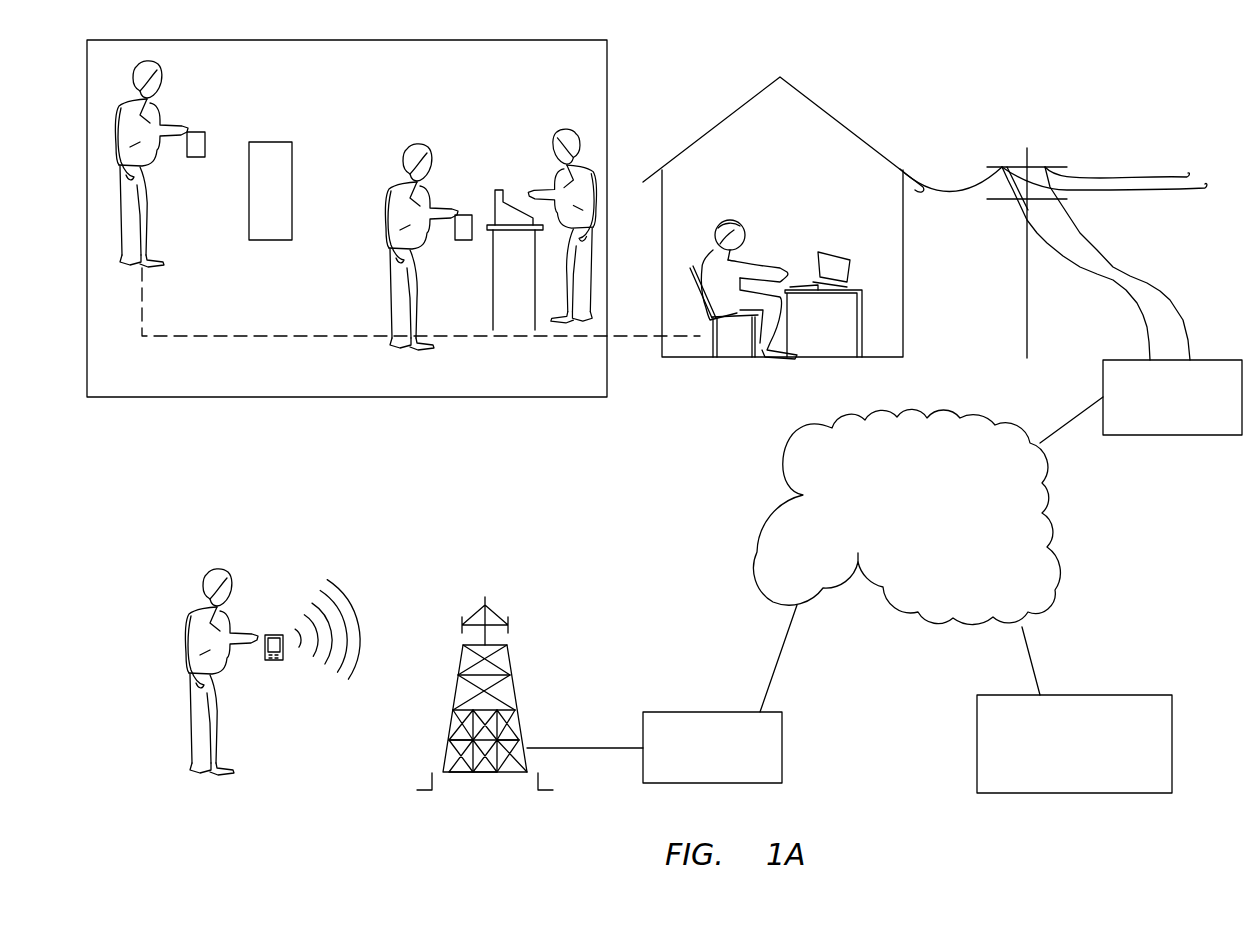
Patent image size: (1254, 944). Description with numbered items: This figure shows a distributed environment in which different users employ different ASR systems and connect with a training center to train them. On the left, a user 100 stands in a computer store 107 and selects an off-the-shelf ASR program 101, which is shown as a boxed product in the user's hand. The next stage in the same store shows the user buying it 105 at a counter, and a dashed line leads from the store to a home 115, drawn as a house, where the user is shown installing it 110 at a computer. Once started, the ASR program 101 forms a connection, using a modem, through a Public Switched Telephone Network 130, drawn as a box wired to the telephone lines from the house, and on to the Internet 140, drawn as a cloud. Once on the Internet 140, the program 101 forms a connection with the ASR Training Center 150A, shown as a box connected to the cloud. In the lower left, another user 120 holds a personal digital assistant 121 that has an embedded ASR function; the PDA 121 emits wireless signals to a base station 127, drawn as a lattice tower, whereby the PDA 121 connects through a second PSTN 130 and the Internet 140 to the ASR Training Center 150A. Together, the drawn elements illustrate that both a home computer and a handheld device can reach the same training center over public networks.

The user 100 is at (152, 220).
The ASR program 101 is at (197, 131).
The buying 105 is at (410, 343).
The computer store 107 is at (600, 78).
The installing 110 is at (731, 352).
The home 115 is at (850, 128).
The user 120 is at (213, 768).
The personal digital assistant (PDA) 121 is at (273, 634).
The base station 127 is at (515, 697).
The Public Switched Telephone Network (PSTN) 130 is at (1222, 360).
The Internet 140 is at (760, 532).
The ASR Training Center 150A is at (1172, 745).